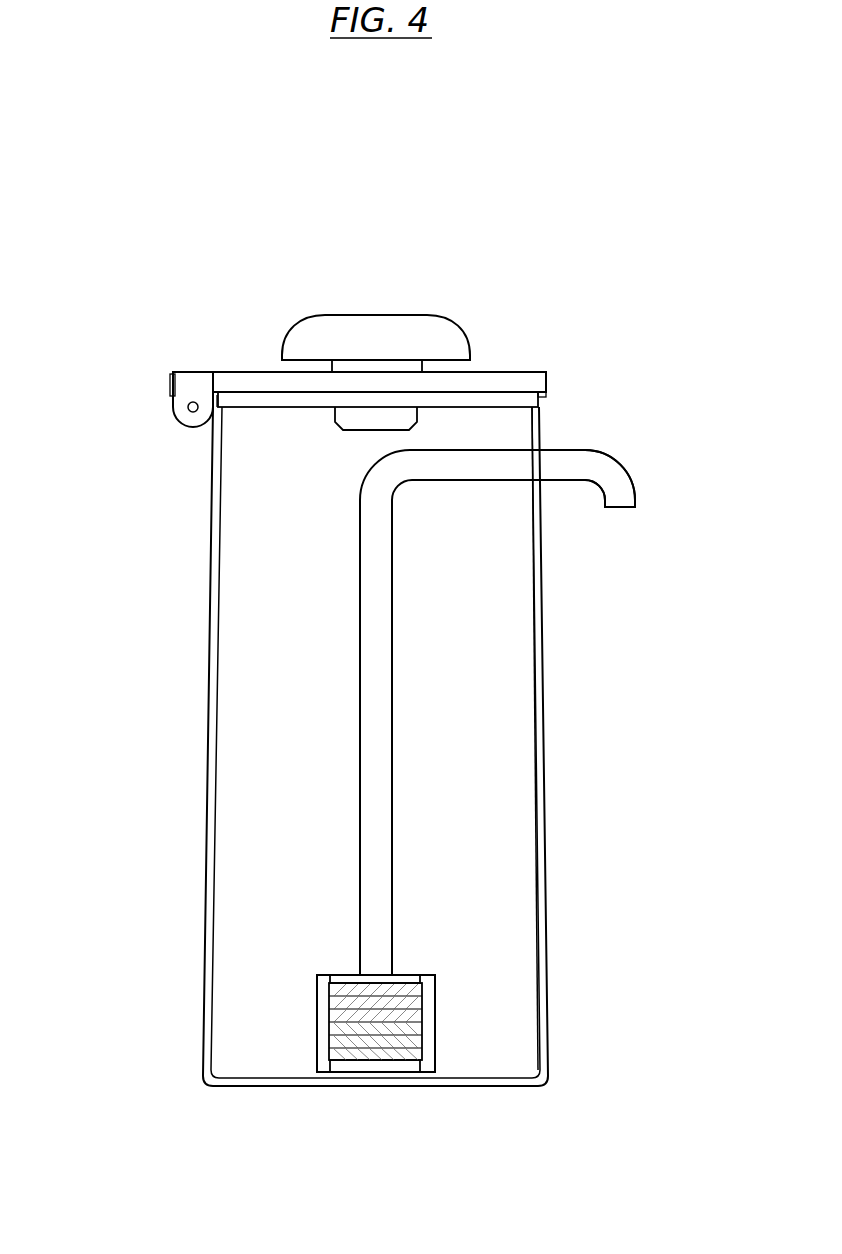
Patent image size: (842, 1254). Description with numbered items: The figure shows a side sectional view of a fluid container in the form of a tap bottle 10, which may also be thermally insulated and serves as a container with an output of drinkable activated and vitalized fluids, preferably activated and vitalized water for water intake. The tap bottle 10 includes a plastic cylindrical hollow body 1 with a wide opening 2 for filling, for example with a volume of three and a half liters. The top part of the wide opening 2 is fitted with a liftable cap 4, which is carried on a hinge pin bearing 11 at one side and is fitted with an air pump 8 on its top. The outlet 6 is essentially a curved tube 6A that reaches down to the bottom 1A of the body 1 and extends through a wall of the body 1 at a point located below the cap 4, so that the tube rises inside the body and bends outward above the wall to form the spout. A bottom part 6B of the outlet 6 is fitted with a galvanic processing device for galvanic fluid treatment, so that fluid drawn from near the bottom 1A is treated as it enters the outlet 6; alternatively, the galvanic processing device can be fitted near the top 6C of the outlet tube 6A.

The plastic cylindrical hollow body 1 is at (545, 737).
The bottom 1A is at (493, 1078).
The wide opening 2 is at (540, 430).
The liftable cap 4 is at (493, 371).
The outlet 6 is at (632, 475).
The curved tube 6A is at (394, 645).
The bottom part of the outlet 6B is at (392, 975).
The top of the outlet tube 6C is at (620, 508).
The air pump 8 is at (348, 313).
The tap bottle 10 is at (397, 623).
The hinge pin bearing 11 is at (193, 410).